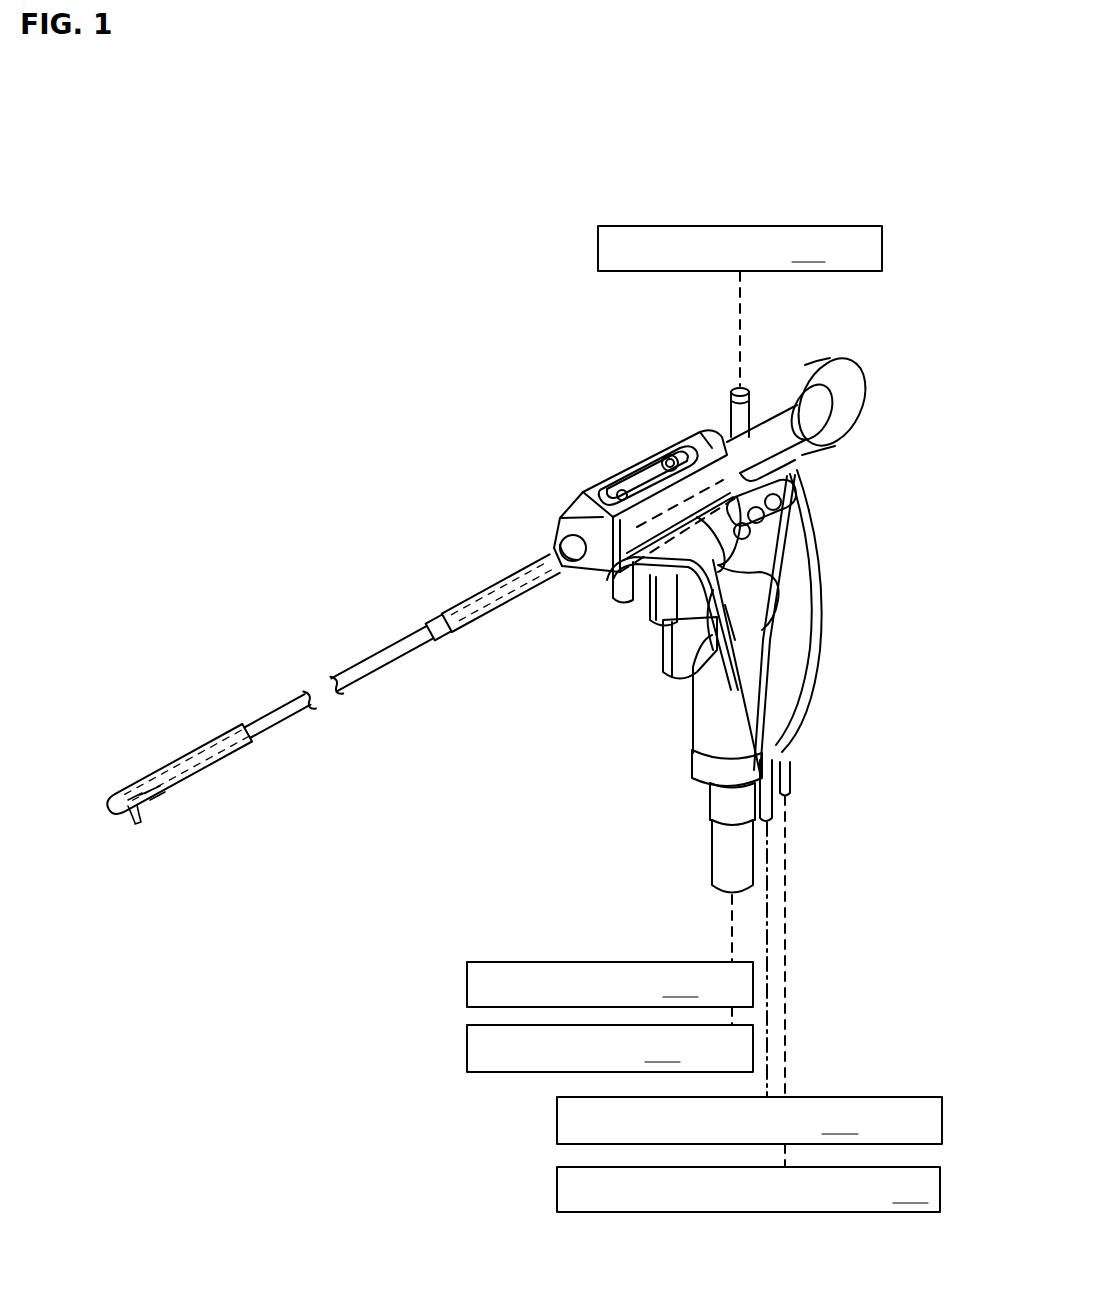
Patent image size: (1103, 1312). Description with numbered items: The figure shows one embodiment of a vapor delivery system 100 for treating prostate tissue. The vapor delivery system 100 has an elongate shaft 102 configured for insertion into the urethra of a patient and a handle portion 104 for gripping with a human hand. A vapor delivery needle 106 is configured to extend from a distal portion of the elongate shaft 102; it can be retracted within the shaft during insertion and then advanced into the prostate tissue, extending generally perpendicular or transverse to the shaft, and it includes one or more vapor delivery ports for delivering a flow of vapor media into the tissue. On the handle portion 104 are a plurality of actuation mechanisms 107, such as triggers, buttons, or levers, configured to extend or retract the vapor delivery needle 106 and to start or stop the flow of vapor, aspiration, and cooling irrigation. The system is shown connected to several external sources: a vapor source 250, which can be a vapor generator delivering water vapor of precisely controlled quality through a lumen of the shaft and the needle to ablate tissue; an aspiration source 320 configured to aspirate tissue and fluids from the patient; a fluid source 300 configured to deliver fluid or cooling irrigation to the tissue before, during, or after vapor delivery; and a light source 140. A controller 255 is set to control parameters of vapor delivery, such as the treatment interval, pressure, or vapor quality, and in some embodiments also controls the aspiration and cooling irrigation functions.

The vapor delivery system 100 is at (390, 410).
The elongate shaft 102 is at (273, 712).
The handle portion 104 is at (816, 627).
The vapor delivery needle 106 is at (140, 822).
The actuation mechanisms 107 is at (652, 678).
The light source 140 is at (740, 306).
The vapor source 250 is at (610, 960).
The controller 255 is at (610, 1048).
The fluid source 300 is at (748, 1004).
The aspiration source 320 is at (749, 983).